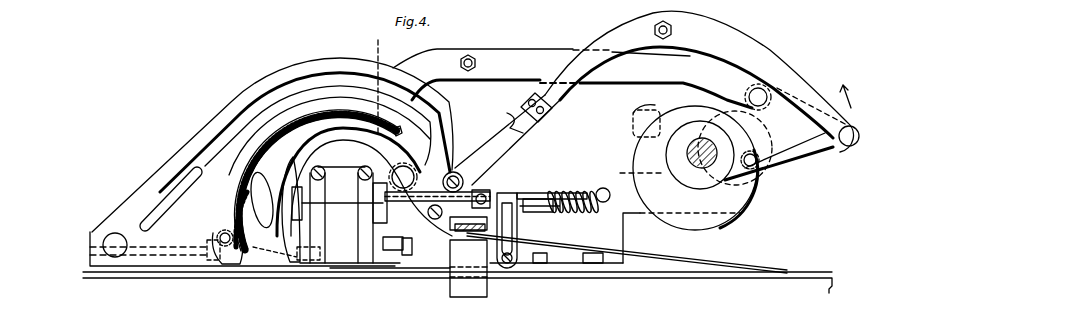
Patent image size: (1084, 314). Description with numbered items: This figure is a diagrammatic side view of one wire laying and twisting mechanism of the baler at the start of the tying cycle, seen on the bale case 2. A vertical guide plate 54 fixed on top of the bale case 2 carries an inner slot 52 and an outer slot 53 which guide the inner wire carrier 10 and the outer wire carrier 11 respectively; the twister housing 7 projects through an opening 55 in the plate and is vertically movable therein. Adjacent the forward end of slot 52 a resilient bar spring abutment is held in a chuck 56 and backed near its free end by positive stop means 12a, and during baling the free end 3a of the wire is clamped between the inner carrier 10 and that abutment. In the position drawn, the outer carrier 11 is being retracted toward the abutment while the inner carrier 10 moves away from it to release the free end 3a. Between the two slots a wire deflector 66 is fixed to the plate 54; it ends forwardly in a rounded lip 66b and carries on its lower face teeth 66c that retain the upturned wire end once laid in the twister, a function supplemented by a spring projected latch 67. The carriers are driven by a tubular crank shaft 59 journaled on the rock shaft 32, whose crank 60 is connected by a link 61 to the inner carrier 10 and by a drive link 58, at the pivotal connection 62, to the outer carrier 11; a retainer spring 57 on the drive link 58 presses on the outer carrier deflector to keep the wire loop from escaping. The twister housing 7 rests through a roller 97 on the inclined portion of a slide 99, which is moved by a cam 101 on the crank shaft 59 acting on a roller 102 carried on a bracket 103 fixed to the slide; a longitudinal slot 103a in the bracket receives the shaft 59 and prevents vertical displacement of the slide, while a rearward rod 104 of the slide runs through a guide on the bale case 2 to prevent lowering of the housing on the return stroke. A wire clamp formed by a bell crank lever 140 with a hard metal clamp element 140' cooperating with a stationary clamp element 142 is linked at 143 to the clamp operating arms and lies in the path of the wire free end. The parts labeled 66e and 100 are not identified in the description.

The bale case 2 is at (150, 275).
The extension or rod 104 is at (86, 244).
The guide plate 54 is at (162, 165).
The slot 53 is at (250, 100).
The hood inner edge 66e is at (235, 157).
The slot 52 is at (300, 125).
The wire deflector 66 is at (372, 115).
The rounded lip 66b is at (396, 125).
The teeth or serrations 66c is at (258, 252).
The spring projected latch 67 is at (288, 172).
The inner wire carrier 10 is at (378, 152).
The positive stop means 12a is at (440, 214).
The opening 55 is at (339, 214).
The twister housing 7 is at (356, 250).
The roller 97 is at (304, 270).
The slide 99 is at (384, 272).
The free end of the wire 3a is at (450, 245).
The outer wire carrier 11 is at (453, 170).
The chuck 56 is at (485, 190).
The retainer spring 57 is at (540, 125).
The link 61 is at (538, 55).
The drive link 58 is at (770, 52).
The pivotal connection 62 is at (766, 93).
The bracket 103 is at (684, 100).
The longitudinal slot 103a is at (660, 108).
The cam 101 is at (722, 226).
The rock shaft 32 is at (686, 154).
The tubular crank shaft 59 is at (716, 148).
The roller 102 is at (762, 148).
The crank 60 is at (792, 160).
The spring 100 is at (592, 188).
The stationary clamp element 142 is at (510, 193).
The link connection 143 is at (518, 196).
The bell crank lever 140 is at (556, 230).
The hard metal clamp element 140' is at (627, 251).